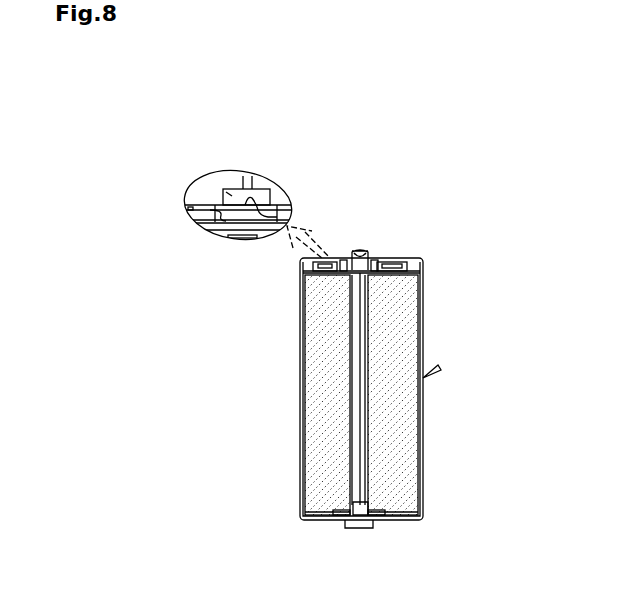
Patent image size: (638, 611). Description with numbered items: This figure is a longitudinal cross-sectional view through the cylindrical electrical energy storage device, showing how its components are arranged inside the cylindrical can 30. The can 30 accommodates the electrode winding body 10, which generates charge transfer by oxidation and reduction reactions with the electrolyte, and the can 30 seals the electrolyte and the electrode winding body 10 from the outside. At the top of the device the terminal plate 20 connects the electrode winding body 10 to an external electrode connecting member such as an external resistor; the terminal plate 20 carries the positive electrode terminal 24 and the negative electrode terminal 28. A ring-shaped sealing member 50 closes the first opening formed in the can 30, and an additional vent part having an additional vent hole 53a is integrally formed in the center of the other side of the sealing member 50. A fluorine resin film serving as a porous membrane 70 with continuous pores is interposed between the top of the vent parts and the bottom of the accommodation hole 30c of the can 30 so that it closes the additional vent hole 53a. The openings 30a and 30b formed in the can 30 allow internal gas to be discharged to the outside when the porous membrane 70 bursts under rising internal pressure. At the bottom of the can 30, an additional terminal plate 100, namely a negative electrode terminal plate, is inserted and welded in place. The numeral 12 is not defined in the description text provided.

The additional terminal plate 100 is at (315, 520).
The electrode winding body 10 is at (390, 398).
The second electrode plate 12 is at (355, 440).
The terminal plate 20 is at (360, 277).
The positive electrode terminal 24 is at (364, 251).
The negative electrode terminal 28 is at (358, 530).
The can 30 is at (440, 368).
The opening 30a is at (386, 259).
The opening 30b is at (250, 184).
The accommodation hole 30c is at (233, 197).
The sealing member 50 is at (210, 212).
The additional vent hole 53a is at (212, 216).
The porous membrane 70 is at (268, 218).